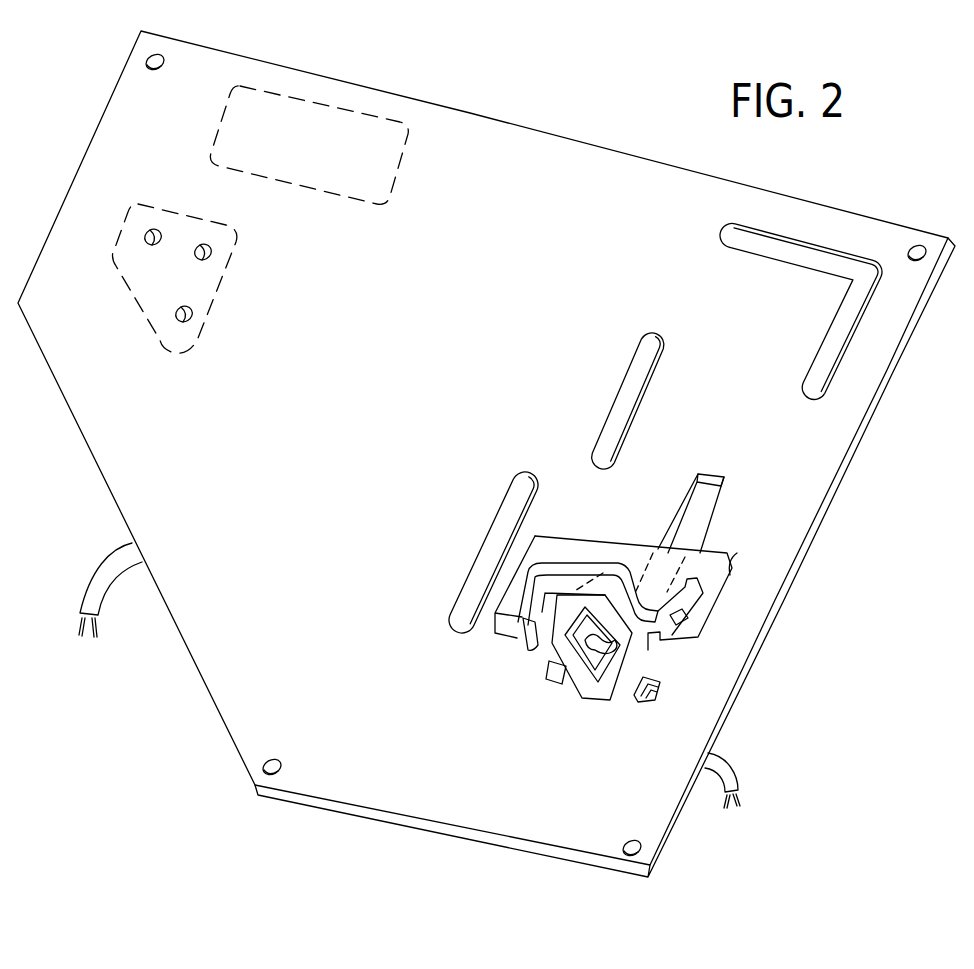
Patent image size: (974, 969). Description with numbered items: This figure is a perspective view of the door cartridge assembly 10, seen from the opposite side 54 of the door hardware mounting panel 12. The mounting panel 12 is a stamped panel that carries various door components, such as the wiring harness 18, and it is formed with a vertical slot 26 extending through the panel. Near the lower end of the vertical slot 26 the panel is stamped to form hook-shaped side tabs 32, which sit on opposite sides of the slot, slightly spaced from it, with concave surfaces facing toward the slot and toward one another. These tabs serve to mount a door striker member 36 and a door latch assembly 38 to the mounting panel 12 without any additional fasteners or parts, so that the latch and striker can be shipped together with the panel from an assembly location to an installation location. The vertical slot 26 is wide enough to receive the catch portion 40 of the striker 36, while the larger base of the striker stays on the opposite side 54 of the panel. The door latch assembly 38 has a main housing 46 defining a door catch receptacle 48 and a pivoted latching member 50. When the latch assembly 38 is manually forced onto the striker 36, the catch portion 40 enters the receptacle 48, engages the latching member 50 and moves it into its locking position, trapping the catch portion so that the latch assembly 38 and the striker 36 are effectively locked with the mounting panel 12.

The door cartridge assembly 10 is at (616, 119).
The door hardware mounting panel 12 is at (478, 828).
The wiring harness 18 is at (737, 772).
The vertical slot 26 is at (698, 489).
The hook-shaped side tabs 32 is at (663, 683).
The door striker member 36 is at (561, 670).
The door latch assembly 38 is at (726, 550).
The catch portion 40 is at (583, 700).
The main housing 46 is at (730, 575).
The door catch receptacle 48 is at (558, 622).
The pivoted latching member 50 is at (620, 655).
The opposite side 54 is at (103, 452).